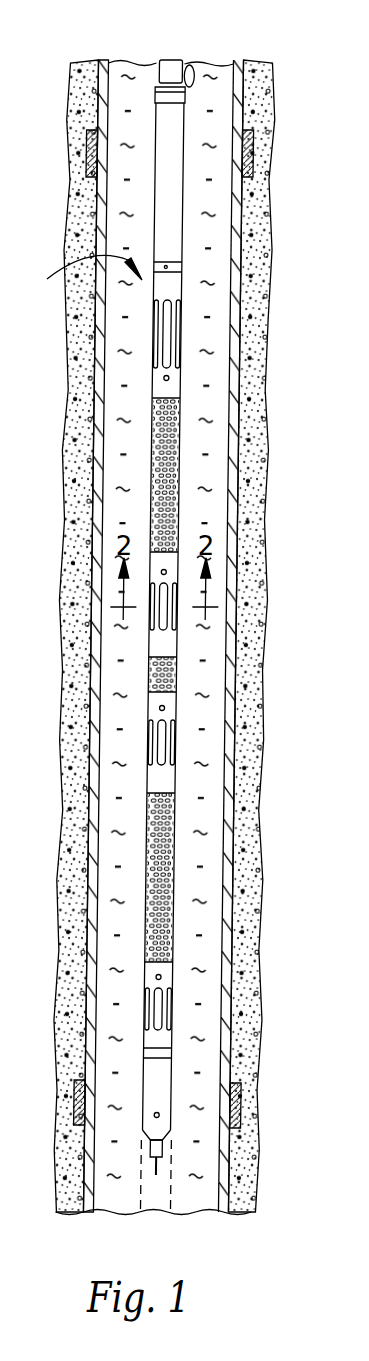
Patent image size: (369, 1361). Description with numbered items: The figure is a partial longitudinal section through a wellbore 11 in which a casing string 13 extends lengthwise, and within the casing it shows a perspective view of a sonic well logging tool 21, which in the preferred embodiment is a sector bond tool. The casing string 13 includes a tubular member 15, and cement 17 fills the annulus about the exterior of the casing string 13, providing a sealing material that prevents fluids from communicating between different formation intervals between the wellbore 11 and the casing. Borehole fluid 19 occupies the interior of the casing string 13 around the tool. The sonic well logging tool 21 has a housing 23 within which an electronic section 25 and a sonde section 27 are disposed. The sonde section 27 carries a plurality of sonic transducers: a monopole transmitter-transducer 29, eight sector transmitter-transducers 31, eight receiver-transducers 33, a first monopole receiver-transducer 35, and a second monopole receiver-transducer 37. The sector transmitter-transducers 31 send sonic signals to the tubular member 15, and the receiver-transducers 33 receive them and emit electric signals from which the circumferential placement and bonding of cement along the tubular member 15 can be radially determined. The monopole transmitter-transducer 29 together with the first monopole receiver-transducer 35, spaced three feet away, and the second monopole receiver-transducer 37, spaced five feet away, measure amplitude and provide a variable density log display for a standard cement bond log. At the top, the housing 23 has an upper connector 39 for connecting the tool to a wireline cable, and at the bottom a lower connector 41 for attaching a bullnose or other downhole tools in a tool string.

The wellbore 11 is at (268, 105).
The casing string 13 is at (257, 201).
The tubular member 15 is at (241, 300).
The cement 17 is at (248, 263).
The borehole fluid 19 is at (218, 214).
The sonic well logging tool 21 is at (81, 274).
The housing 23 is at (164, 185).
The electronic section 25 is at (164, 238).
The sonde section 27 is at (155, 298).
The monopole transmitter-transducer 29 is at (184, 325).
The sector transmitter-transducers 31 is at (184, 359).
The receiver-transducers 33 is at (180, 616).
The first monopole receiver-transducer 35 is at (176, 748).
The second monopole receiver-transducer 37 is at (175, 1011).
The upper connector 39 is at (191, 87).
The lower connector 41 is at (167, 1132).